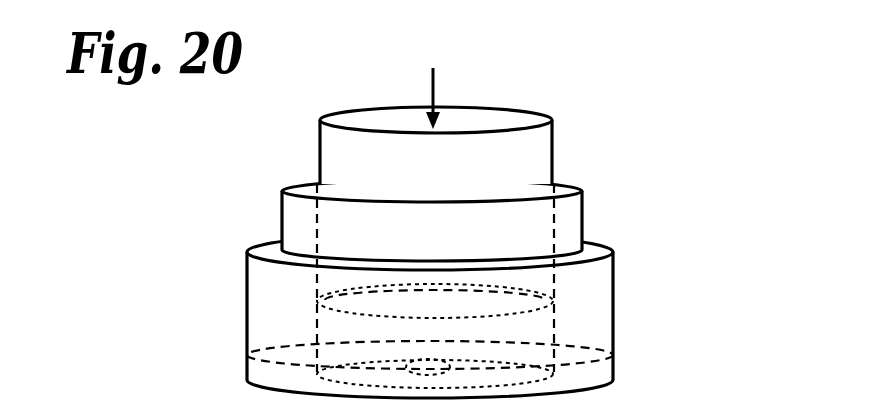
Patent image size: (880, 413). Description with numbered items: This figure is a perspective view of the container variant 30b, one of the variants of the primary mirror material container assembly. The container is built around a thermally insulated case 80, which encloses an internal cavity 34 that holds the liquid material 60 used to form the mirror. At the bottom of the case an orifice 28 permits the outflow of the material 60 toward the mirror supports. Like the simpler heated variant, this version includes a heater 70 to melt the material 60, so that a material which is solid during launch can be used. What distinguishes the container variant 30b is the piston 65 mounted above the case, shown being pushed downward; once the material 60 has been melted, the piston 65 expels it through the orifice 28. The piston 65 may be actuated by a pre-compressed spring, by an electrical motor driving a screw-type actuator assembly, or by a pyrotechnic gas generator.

The container variant 30b is at (224, 154).
The piston 65 is at (482, 118).
The heater 70 is at (570, 219).
The internal cavity 34 is at (567, 295).
The thermally insulated case 80 is at (597, 308).
The liquid material 60 is at (615, 351).
The orifice 28 is at (420, 362).